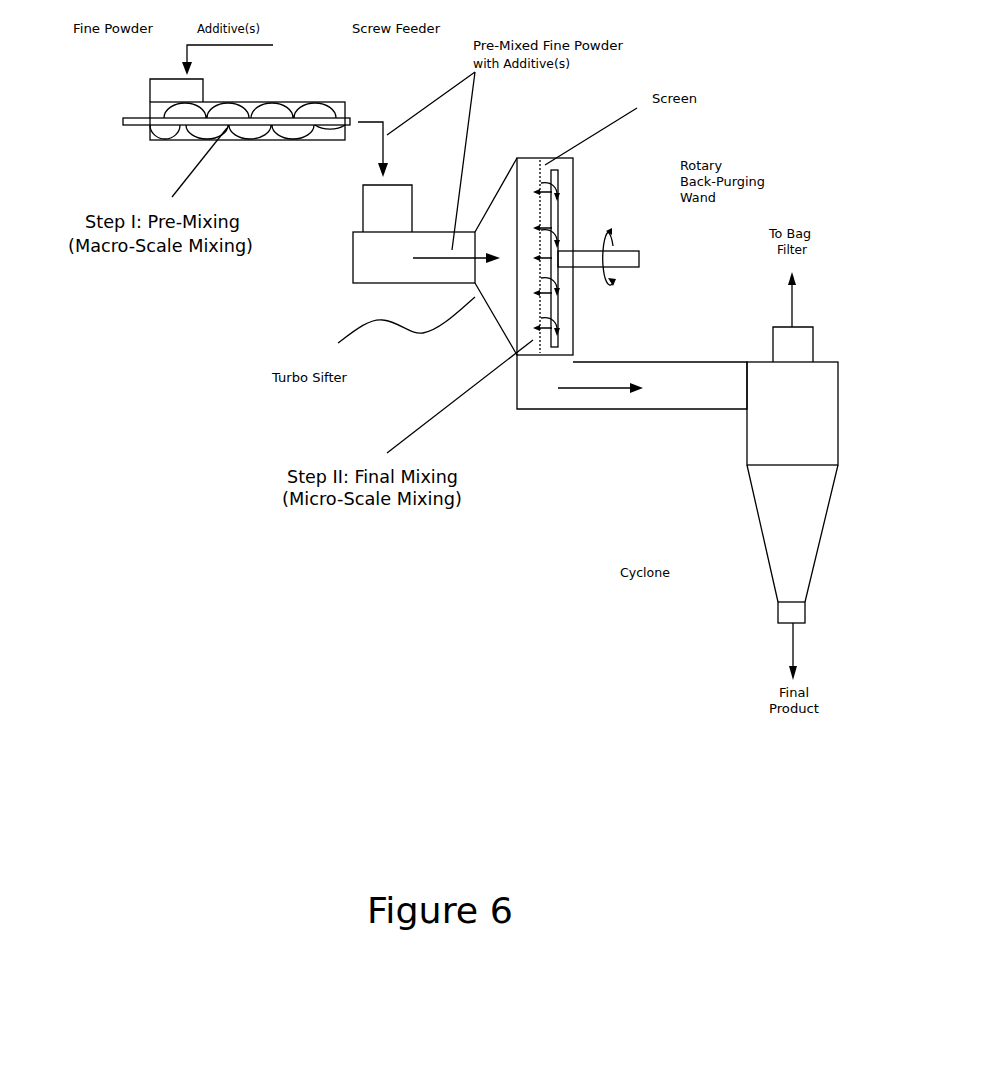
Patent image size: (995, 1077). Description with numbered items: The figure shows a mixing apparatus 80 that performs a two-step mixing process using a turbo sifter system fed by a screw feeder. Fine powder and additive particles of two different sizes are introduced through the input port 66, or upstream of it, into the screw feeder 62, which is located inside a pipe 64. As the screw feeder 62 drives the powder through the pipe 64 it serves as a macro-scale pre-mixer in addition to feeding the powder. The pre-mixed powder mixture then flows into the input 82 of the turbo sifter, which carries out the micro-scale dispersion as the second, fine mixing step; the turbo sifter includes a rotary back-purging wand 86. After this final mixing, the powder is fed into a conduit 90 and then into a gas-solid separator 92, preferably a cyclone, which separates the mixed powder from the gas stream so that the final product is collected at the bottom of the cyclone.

The screw feeder 62 is at (258, 100).
The pipe 64 is at (180, 140).
The input port 66 is at (162, 89).
The mixing apparatus 80 is at (718, 127).
The input of turbo sifter 82 is at (382, 209).
The rotary back-purging wand 86 is at (560, 218).
The conduit 90 is at (637, 412).
The gas-solid separator 92 is at (738, 443).